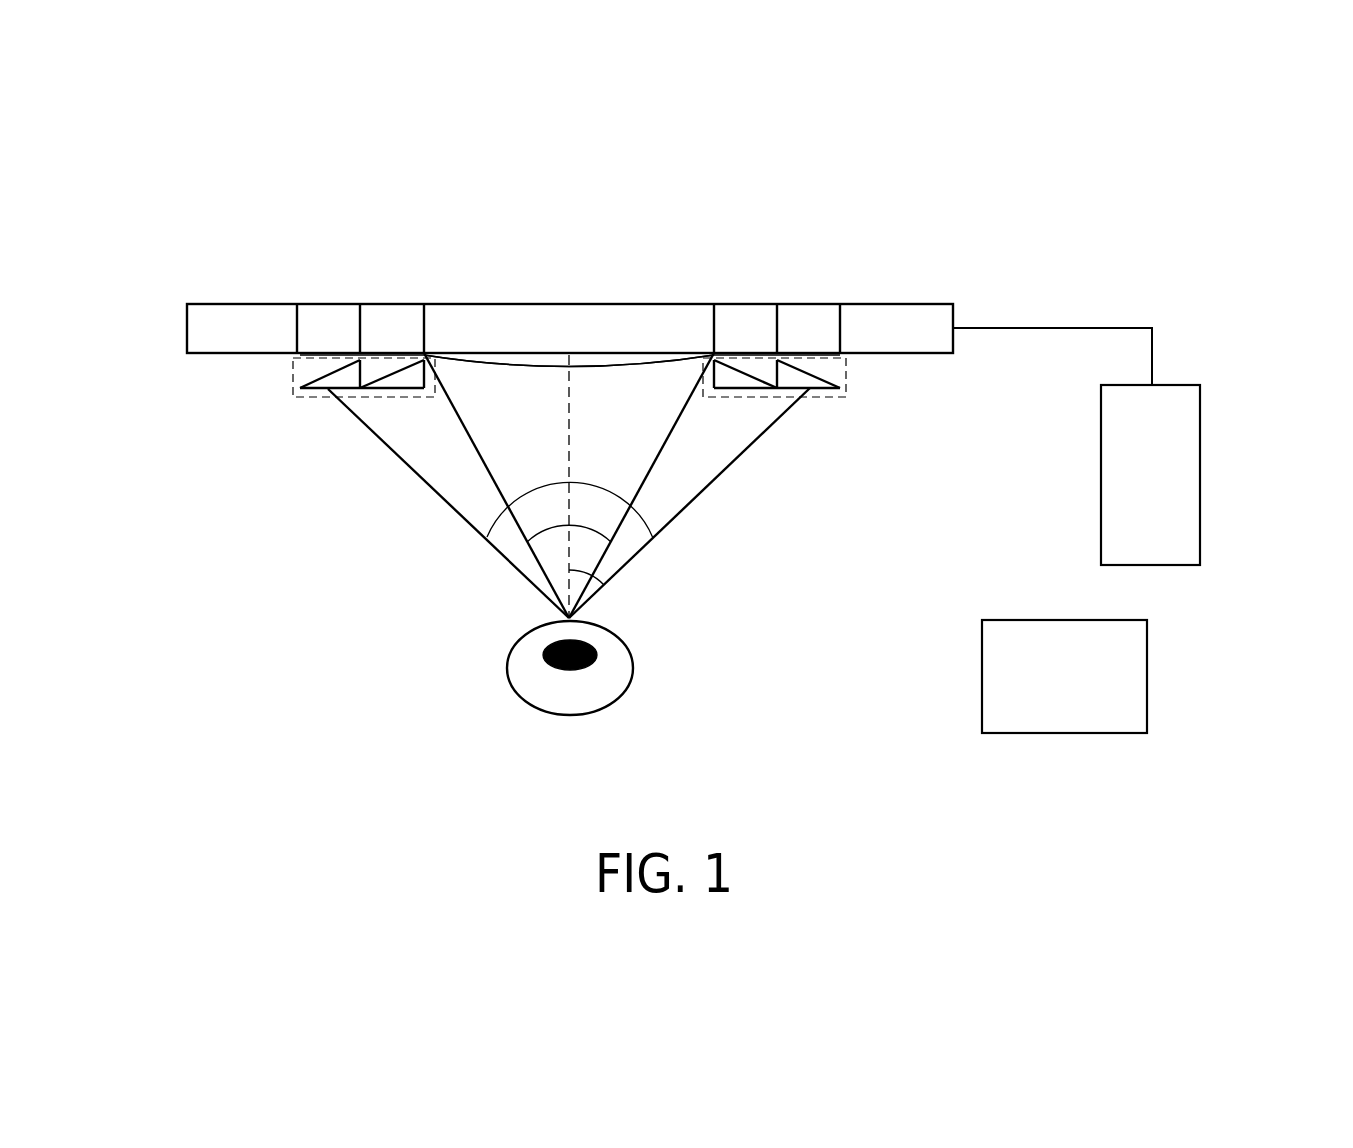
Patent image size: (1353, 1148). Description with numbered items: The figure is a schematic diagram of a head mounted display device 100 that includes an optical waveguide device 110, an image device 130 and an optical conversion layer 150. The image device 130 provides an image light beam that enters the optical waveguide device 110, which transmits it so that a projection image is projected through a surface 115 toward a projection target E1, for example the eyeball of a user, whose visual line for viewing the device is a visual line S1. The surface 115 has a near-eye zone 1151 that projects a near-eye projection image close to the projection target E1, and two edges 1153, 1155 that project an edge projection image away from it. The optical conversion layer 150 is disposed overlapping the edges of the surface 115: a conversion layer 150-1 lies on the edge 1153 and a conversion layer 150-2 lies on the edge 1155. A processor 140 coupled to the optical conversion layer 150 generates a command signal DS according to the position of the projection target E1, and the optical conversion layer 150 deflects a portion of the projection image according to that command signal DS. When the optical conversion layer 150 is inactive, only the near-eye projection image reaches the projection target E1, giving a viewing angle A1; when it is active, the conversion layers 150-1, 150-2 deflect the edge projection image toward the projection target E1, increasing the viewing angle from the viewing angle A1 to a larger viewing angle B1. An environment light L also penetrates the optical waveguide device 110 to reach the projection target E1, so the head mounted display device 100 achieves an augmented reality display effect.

The head mounted display device 100 is at (1225, 827).
The optical waveguide device 110 is at (888, 318).
The surface 115 is at (227, 358).
The near-eye zone 1151 is at (530, 370).
The edge 1153 is at (390, 358).
The edge 1155 is at (768, 360).
The conversion layer 150-1 is at (292, 390).
The conversion layer 150-2 is at (847, 387).
The optical conversion layer 150 is at (205, 770).
The image device 130 is at (1200, 455).
The processor 140 is at (1147, 677).
The command signal DS is at (318, 400).
The environment light L is at (569, 227).
The viewing angle A1 is at (588, 530).
The viewing angle B1 is at (600, 487).
The visual line S1 is at (575, 572).
The projection target E1 is at (618, 672).